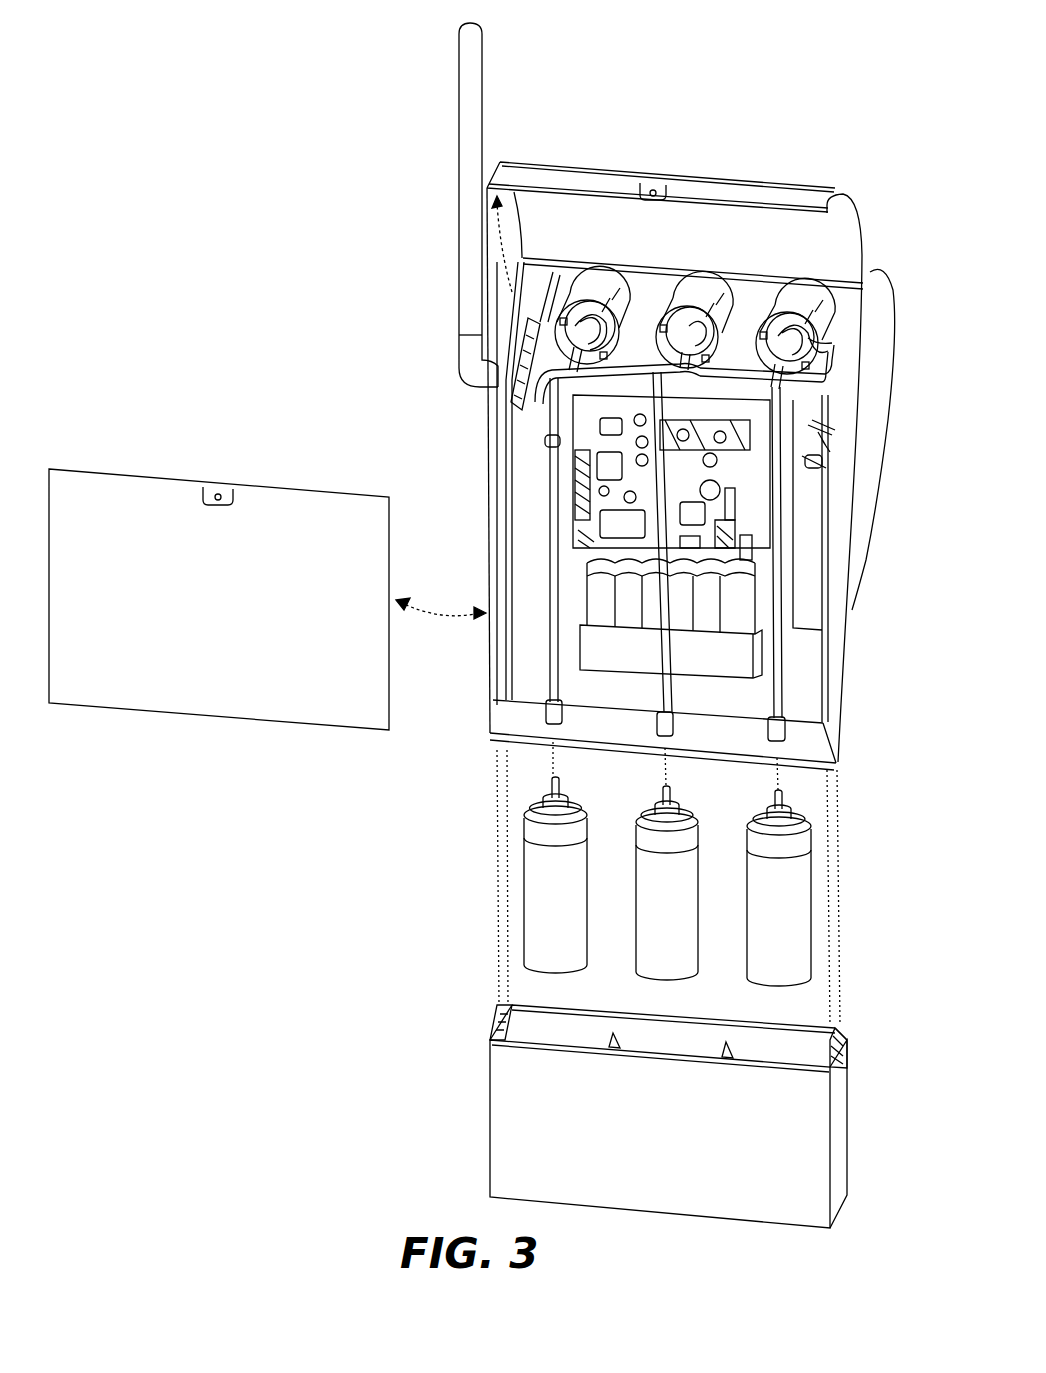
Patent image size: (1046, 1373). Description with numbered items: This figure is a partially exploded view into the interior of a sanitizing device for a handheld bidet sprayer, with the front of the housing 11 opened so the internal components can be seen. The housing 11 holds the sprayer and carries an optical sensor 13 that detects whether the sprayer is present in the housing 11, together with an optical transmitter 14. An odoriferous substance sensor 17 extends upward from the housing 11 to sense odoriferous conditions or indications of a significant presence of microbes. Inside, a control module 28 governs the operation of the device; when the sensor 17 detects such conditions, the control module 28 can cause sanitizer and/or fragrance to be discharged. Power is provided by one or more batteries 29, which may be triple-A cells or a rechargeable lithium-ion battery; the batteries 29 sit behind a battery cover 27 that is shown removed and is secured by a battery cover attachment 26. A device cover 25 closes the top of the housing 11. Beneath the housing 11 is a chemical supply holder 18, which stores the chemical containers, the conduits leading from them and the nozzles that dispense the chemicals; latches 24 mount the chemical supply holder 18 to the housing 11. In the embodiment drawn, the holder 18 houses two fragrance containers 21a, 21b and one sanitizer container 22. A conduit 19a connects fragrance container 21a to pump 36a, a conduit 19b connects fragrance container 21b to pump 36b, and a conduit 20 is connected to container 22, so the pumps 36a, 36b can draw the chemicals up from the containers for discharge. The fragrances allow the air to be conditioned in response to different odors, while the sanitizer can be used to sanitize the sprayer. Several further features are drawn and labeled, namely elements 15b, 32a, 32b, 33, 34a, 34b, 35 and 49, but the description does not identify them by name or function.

The housing 11 is at (875, 315).
The optical sensor 13 is at (815, 466).
The optical transmitter 14 is at (568, 462).
The bracket 15b is at (548, 440).
The odoriferous substance sensor 17 is at (438, 80).
The chemical supply holder 18 is at (523, 1115).
The conduit 19a is at (782, 693).
The conduit 19b is at (560, 672).
The conduit 20 is at (672, 686).
The fragrance container 21a is at (787, 907).
The fragrance container 21b is at (545, 895).
The sanitizer container 22 is at (686, 927).
The latch 24 is at (513, 1002).
The device cover 25 is at (853, 225).
The battery cover attachment 26 is at (650, 185).
The battery cover 27 is at (105, 500).
The control module 28 is at (590, 537).
The batteries 29 is at (735, 608).
The manifold tube 32a is at (835, 380).
The manifold tube 32b is at (540, 400).
The pump 33 is at (702, 290).
The outlet tube 34a is at (810, 347).
The outlet tube 34b is at (545, 305).
The pump motor 35 is at (692, 290).
The pump 36a is at (803, 300).
The pump 36b is at (600, 288).
The antenna bracket 49 is at (515, 322).